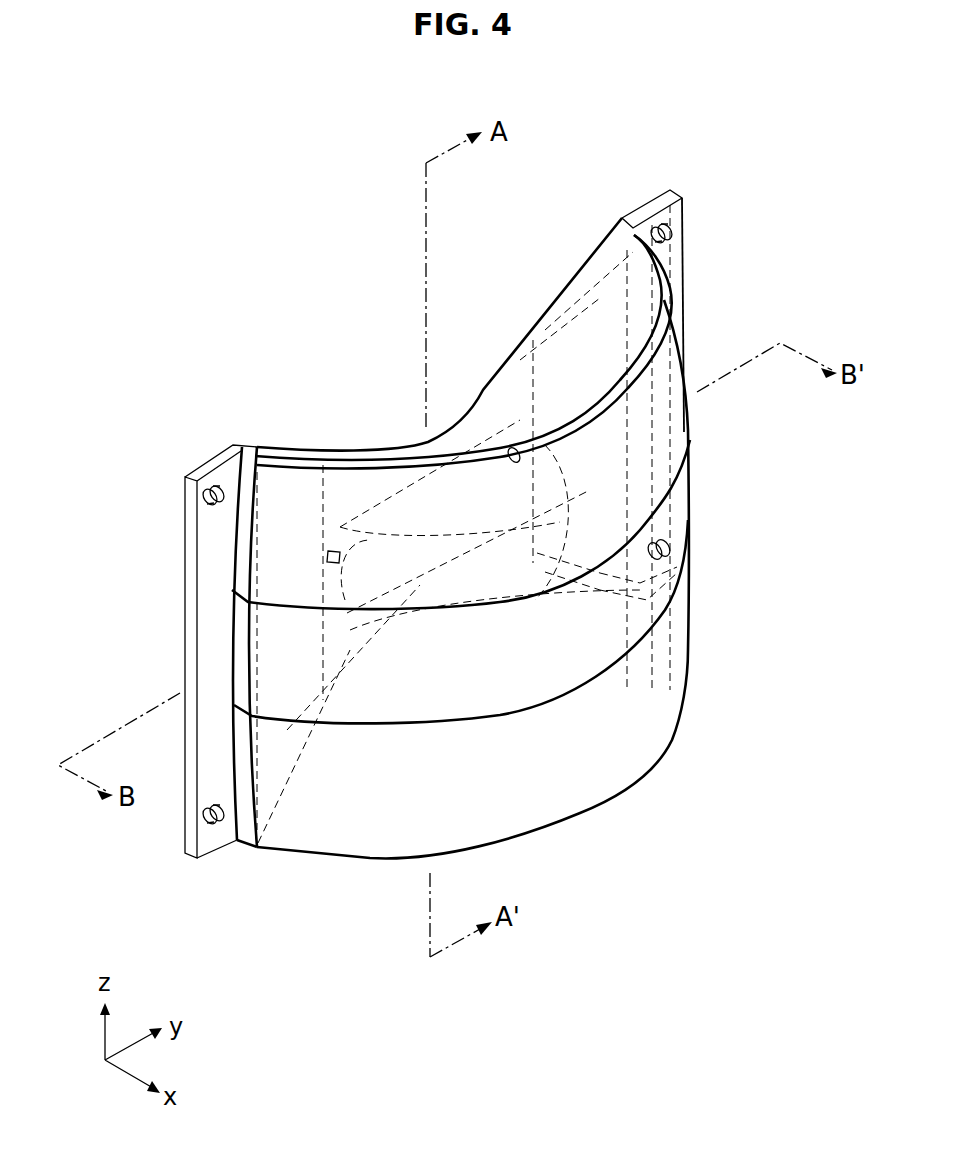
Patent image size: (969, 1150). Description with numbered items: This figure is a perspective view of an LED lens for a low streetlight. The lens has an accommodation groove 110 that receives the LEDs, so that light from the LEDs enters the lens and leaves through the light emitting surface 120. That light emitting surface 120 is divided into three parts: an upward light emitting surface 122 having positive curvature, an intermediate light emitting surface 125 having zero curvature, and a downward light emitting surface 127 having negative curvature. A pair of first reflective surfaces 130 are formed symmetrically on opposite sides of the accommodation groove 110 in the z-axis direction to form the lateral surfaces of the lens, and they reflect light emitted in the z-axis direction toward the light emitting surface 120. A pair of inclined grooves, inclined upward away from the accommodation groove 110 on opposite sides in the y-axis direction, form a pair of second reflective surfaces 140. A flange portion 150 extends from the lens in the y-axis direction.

The accommodation groove 110 is at (400, 558).
The light emitting surface 120 is at (569, 524).
The upward light emitting surface 122 is at (580, 488).
The intermediate light emitting surface 125 is at (583, 638).
The downward light emitting surface 127 is at (546, 754).
The first reflective surface 130 is at (498, 410).
The second reflective surface 140 is at (568, 350).
The flange portion 150 is at (212, 544).